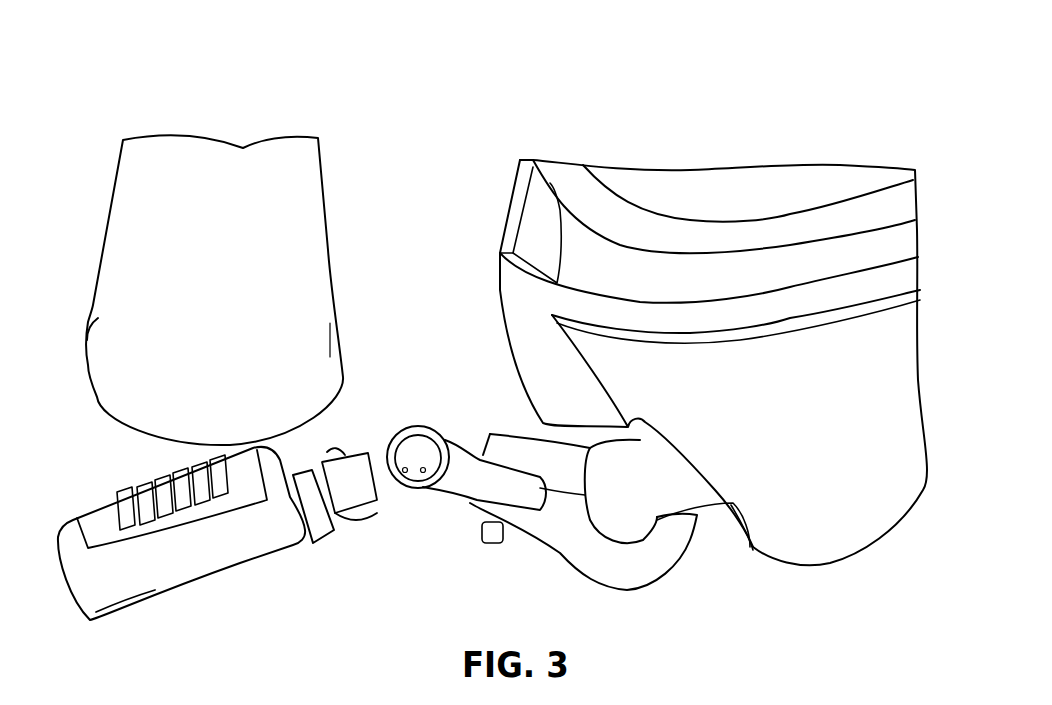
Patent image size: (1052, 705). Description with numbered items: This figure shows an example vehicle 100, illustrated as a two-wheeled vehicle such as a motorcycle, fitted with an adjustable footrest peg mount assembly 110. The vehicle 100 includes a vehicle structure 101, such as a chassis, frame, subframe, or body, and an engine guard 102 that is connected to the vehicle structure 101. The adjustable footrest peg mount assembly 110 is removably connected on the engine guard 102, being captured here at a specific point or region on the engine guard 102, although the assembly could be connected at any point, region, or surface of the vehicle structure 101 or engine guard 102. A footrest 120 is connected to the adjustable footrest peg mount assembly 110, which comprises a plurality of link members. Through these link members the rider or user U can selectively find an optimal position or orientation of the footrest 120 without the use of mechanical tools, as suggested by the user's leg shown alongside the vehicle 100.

The user U is at (228, 165).
The vehicle 100 is at (713, 329).
The vehicle structure 101 is at (860, 527).
The engine guard 102 is at (689, 497).
The adjustable footrest peg mount assembly 110 is at (483, 503).
The footrest 120 is at (67, 537).